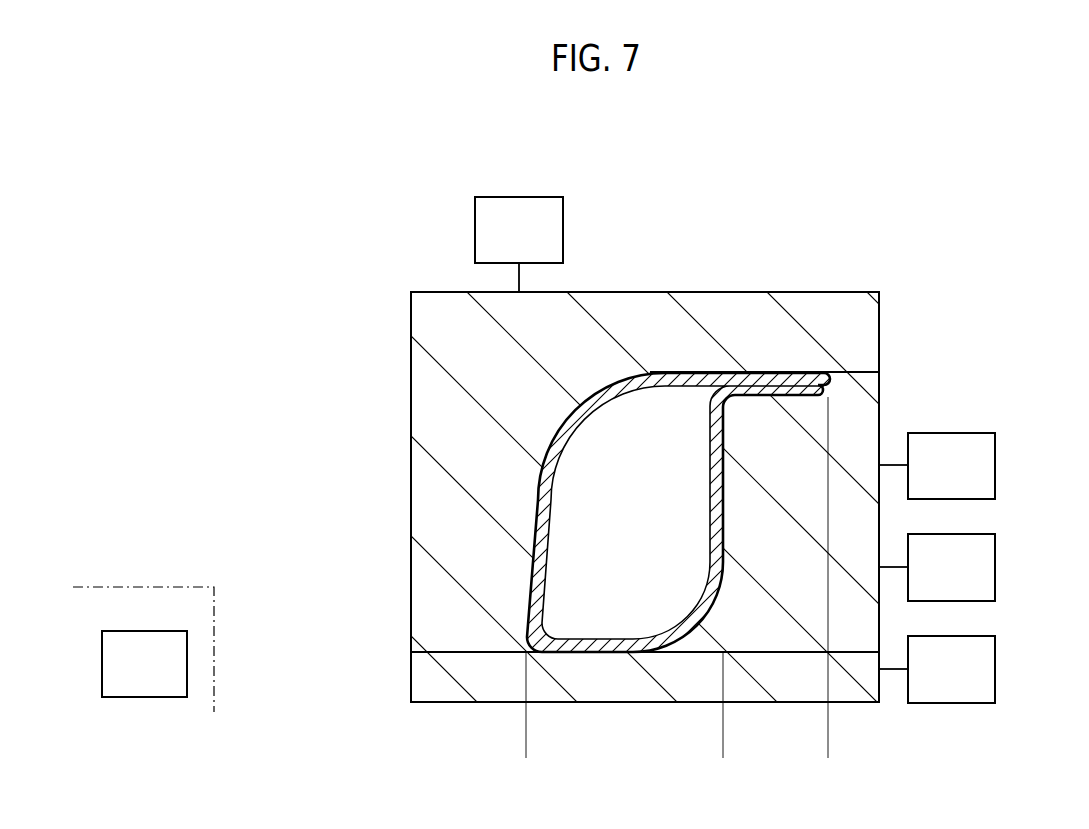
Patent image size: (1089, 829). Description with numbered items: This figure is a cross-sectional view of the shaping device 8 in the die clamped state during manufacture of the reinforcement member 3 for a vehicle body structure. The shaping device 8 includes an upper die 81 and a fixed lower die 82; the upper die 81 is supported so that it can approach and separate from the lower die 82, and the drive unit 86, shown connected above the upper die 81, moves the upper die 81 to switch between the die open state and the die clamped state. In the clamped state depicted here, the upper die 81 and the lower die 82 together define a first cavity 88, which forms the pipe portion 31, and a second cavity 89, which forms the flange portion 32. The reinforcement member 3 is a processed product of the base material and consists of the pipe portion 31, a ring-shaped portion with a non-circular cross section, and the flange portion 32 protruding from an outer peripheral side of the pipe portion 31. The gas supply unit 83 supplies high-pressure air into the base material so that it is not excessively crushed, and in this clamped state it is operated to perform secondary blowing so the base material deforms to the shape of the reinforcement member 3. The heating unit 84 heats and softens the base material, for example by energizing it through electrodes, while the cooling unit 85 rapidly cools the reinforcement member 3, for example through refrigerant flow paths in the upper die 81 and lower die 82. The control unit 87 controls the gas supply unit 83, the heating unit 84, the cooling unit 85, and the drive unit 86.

The reinforcement member 3 is at (664, 416).
The pipe portion 31 is at (618, 373).
The flange portion 32 is at (747, 310).
The shaping device 8 is at (949, 232).
The upper die 81 is at (850, 281).
The lower die 82 is at (892, 399).
The gas supply unit 83 is at (995, 470).
The heating unit 84 is at (995, 575).
The cooling unit 85 is at (995, 676).
The drive unit 86 is at (475, 236).
The control unit 87 is at (145, 697).
The first cavity 88 is at (526, 742).
The second cavity 89 is at (723, 742).